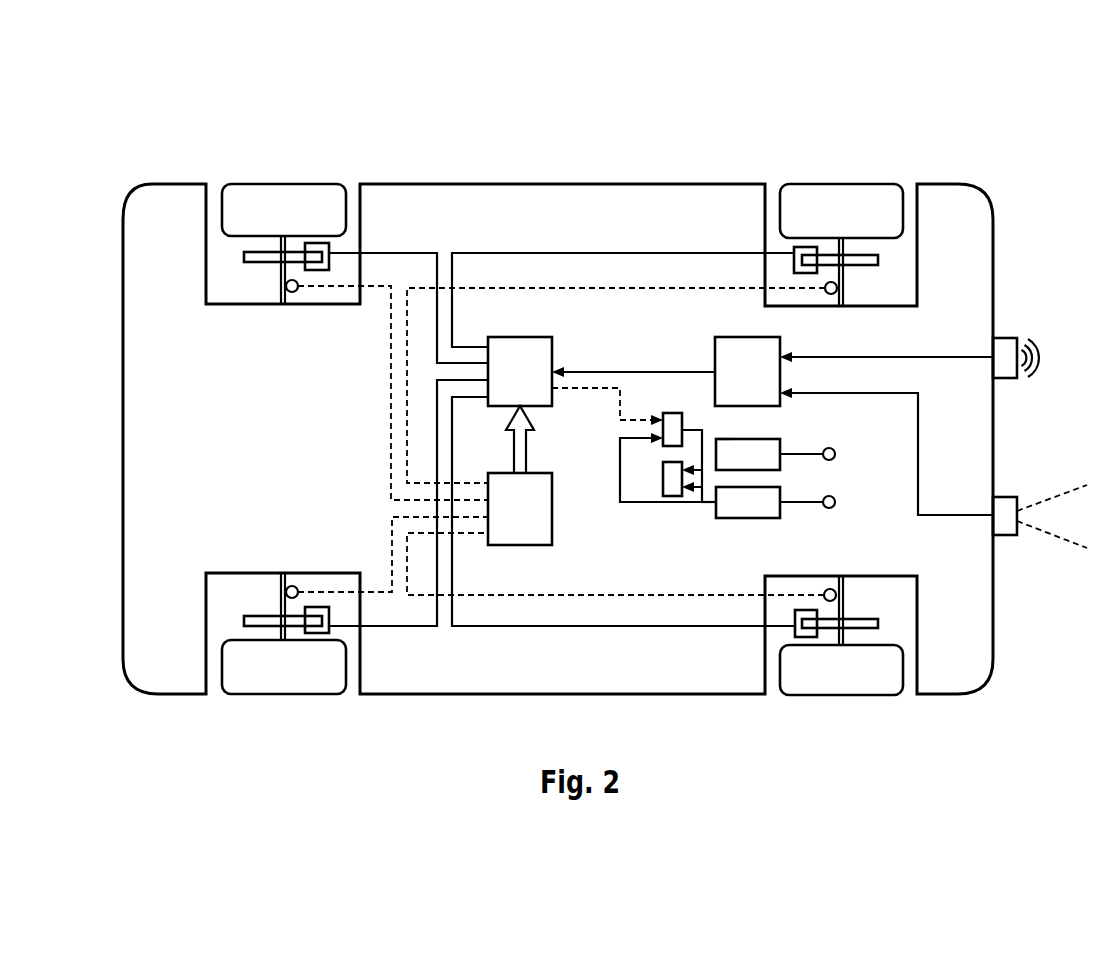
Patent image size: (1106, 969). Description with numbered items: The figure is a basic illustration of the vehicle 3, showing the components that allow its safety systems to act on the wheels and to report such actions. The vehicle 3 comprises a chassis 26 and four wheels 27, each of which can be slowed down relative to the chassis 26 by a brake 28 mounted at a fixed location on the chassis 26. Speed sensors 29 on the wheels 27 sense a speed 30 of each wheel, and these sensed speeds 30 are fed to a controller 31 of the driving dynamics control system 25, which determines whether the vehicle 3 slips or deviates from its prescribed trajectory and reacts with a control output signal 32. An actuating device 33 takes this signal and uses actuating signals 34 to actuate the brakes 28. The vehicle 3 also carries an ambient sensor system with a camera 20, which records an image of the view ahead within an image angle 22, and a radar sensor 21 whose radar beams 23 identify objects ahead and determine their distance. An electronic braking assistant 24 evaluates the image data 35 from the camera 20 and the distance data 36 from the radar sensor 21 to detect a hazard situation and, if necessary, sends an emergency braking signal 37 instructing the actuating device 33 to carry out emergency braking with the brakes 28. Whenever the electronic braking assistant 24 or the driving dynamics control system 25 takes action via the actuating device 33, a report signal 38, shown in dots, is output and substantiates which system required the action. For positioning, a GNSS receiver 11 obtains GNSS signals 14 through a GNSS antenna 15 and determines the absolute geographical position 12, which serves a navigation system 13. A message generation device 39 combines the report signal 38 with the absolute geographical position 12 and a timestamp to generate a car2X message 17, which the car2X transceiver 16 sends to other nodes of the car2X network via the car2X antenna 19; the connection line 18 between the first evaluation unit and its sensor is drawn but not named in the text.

The vehicle 3 is at (115, 155).
The GNSS receiver 11 is at (745, 519).
The absolute geographical position 12 is at (706, 504).
The navigation system 13 is at (662, 482).
The GNSS signals 14 is at (795, 504).
The GNSS antenna 15 is at (836, 500).
The car2X transceiver 16 is at (752, 438).
The car2X message 17 is at (718, 430).
The sensor line 18 is at (810, 452).
The car2X antenna 19 is at (836, 453).
The camera 20 is at (1010, 496).
The radar sensor 21 is at (1012, 337).
The image angle 22 is at (1057, 538).
The radar beams 23 is at (1052, 358).
The electronic braking assistant 24 is at (733, 336).
The driving dynamics control system 25 is at (365, 425).
The chassis 26 is at (553, 184).
The wheels 27 is at (284, 184).
The brake 28 is at (258, 263).
The speed sensors 29 is at (292, 293).
The speed 30 is at (375, 290).
The controller 31 is at (552, 527).
The control output signal 32 is at (513, 452).
The actuating device 33 is at (515, 336).
The actuating signals 34 is at (413, 252).
The image data 35 is at (955, 514).
The distance data 36 is at (955, 356).
The emergency braking signal 37 is at (700, 370).
The report signal 38 is at (618, 411).
The message generation device 39 is at (670, 412).